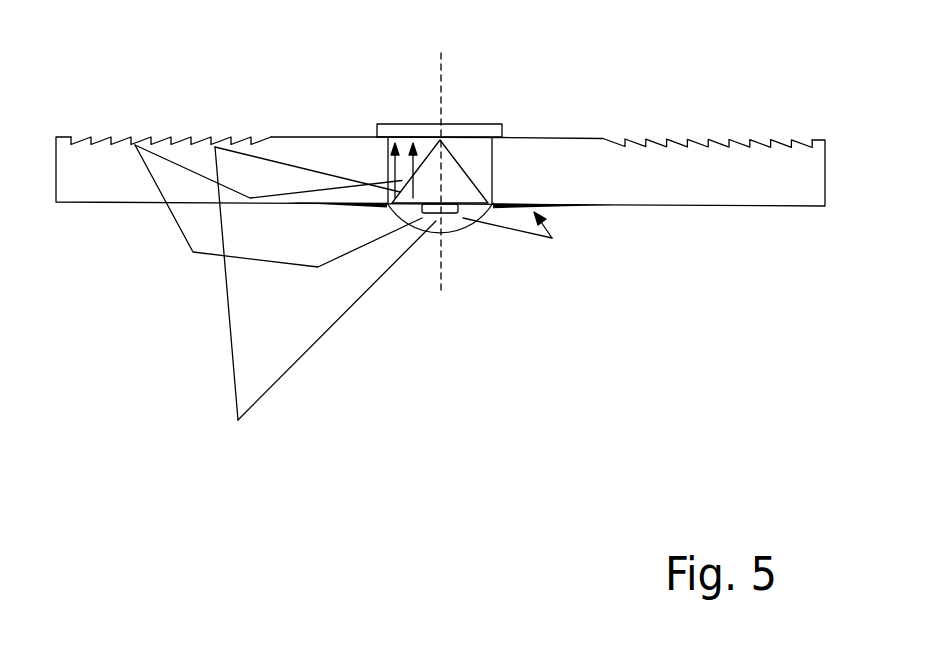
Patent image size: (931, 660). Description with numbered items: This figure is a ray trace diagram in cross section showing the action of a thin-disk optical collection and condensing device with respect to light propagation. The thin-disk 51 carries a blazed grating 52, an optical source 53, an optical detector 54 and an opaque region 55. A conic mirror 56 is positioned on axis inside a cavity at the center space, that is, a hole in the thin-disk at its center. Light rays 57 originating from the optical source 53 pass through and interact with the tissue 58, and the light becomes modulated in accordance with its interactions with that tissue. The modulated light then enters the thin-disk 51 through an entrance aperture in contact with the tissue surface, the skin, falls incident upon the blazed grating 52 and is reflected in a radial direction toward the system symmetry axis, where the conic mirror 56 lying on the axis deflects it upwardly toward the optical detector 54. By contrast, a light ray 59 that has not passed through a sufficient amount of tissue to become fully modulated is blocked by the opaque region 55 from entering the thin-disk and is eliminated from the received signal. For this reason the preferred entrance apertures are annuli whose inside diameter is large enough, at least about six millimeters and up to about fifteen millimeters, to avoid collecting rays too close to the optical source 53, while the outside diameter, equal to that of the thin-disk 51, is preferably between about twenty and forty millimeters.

The thin-disk 51 is at (570, 140).
The blazed grating 52 is at (678, 138).
The optical source 53 is at (452, 211).
The optical detector 54 is at (415, 130).
The opaque region 55 is at (550, 209).
The conic mirror 56 is at (468, 190).
The light rays 57 is at (170, 202).
The tissue 58 is at (283, 318).
The light ray 59 is at (518, 232).